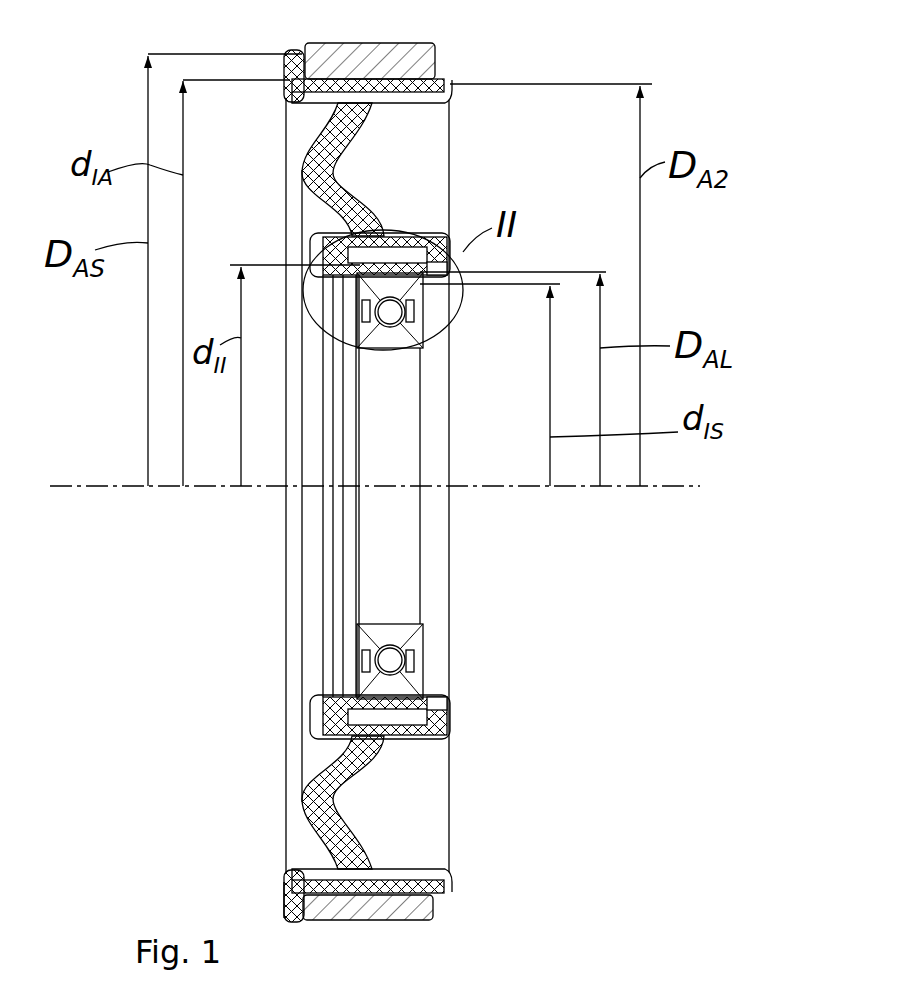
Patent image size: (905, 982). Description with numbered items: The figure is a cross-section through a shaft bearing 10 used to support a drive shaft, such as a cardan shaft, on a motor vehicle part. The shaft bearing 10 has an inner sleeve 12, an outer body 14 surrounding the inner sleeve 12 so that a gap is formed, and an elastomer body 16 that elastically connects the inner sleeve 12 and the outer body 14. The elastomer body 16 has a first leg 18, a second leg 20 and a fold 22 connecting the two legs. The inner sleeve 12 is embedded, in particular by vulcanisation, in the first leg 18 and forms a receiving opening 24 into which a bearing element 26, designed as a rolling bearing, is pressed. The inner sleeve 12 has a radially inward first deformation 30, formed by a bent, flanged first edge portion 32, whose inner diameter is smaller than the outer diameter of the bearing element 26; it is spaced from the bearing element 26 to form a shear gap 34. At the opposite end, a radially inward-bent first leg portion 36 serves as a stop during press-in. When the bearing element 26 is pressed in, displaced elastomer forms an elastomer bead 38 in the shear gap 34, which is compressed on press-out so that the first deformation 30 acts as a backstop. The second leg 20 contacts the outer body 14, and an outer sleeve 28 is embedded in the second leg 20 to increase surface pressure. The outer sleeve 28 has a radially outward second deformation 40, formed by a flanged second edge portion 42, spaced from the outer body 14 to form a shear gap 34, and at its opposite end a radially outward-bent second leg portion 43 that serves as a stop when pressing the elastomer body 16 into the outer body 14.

The shaft bearing 10 is at (614, 62).
The inner sleeve 12 is at (446, 738).
The outer body 14 is at (420, 56).
The elastomer body 16 is at (440, 775).
The first leg 18 is at (452, 715).
The second leg 20 is at (450, 908).
The fold 22 is at (320, 796).
The receiving opening 24 is at (340, 693).
The bearing element 26 is at (445, 622).
The outer sleeve 28 is at (285, 872).
The first deformation 30 is at (335, 715).
The first edge portion 32 is at (340, 738).
The shear gap 34 is at (340, 265).
The first leg portion 36 is at (440, 698).
The elastomer bead 38 is at (355, 290).
The second deformation 40 is at (448, 882).
The second edge portion 42 is at (456, 886).
The second leg portion 43 is at (290, 903).